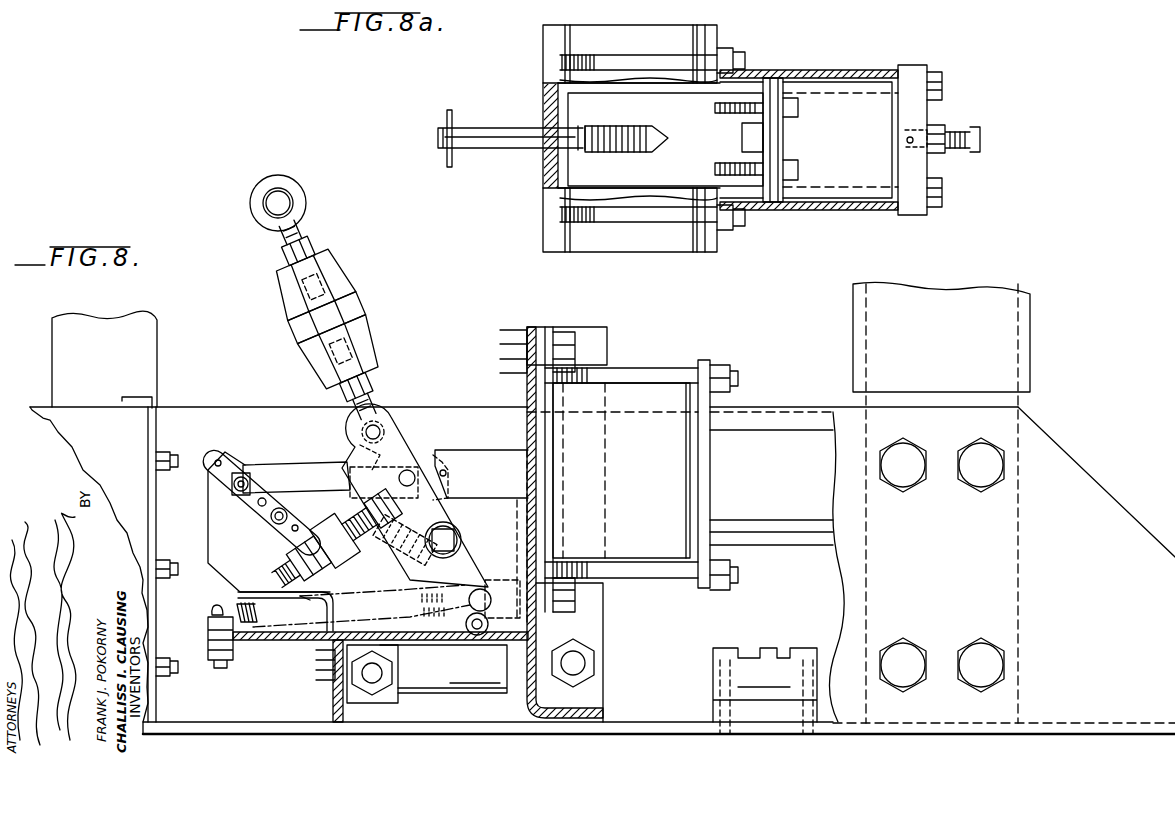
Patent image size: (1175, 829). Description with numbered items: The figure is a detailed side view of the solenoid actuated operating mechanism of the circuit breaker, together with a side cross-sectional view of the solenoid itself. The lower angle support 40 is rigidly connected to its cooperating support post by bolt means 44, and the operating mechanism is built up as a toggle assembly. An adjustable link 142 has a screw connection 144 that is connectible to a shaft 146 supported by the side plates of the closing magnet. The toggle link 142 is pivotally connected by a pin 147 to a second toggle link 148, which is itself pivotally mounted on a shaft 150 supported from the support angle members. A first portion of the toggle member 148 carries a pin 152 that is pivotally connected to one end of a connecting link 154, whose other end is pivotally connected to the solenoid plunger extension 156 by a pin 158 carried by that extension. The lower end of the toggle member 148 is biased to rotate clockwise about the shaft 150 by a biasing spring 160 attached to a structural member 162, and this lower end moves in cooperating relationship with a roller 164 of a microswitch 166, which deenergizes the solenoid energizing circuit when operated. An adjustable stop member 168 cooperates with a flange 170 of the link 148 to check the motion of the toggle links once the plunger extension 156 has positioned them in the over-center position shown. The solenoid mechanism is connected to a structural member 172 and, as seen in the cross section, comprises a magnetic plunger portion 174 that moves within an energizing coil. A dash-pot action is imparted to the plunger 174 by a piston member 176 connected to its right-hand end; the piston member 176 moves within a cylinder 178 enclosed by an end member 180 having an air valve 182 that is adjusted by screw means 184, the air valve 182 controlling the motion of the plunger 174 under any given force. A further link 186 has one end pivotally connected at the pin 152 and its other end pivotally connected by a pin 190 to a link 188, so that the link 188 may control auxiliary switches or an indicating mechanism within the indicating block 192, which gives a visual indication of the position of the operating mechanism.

In FIG. 8, the lower angle support 40 is at (1125, 530).
In FIG. 8, the bolt means 44 is at (993, 628).
In FIG. 8, the adjustable link 142 is at (367, 302).
In FIG. 8, the screw connection 144 is at (293, 240).
In FIG. 8, the shaft 146 is at (280, 200).
In FIG. 8, the pin 147 is at (366, 433).
In FIG. 8, the second toggle link 148 is at (407, 455).
In FIG. 8, the shaft 150 is at (450, 538).
In FIG. 8, the pin 152 is at (399, 478).
In FIG. 8, the connecting link 154 is at (427, 453).
In FIG. 8A, the solenoid plunger extension 156 is at (508, 142).
In FIG. 8, the solenoid plunger extension 156 is at (490, 455).
In FIG. 8A, the pin 158 is at (455, 110).
In FIG. 8, the pin 158 is at (447, 473).
In FIG. 8, the biasing spring 160 is at (408, 612).
In FIG. 8, the structural member 162 is at (265, 638).
In FIG. 8, the roller 164 is at (460, 635).
In FIG. 8, the microswitch 166 is at (448, 688).
In FIG. 8, the adjustable stop member 168 is at (345, 548).
In FIG. 8, the flange 170 is at (347, 597).
In FIG. 8, the structural member 172 is at (530, 673).
In FIG. 8A, the magnetic plunger portion 174 is at (665, 139).
In FIG. 8A, the piston member 176 is at (780, 138).
In FIG. 8A, the cylinder 178 is at (868, 80).
In FIG. 8A, the end member 180 is at (922, 112).
In FIG. 8A, the air valve 182 is at (907, 138).
In FIG. 8A, the screw means 184 is at (980, 137).
In FIG. 8, the link 186 is at (278, 473).
In FIG. 8, the link 188 is at (263, 500).
In FIG. 8, the pin 190 is at (232, 484).
In FIG. 8, the indicating block 192 is at (208, 523).